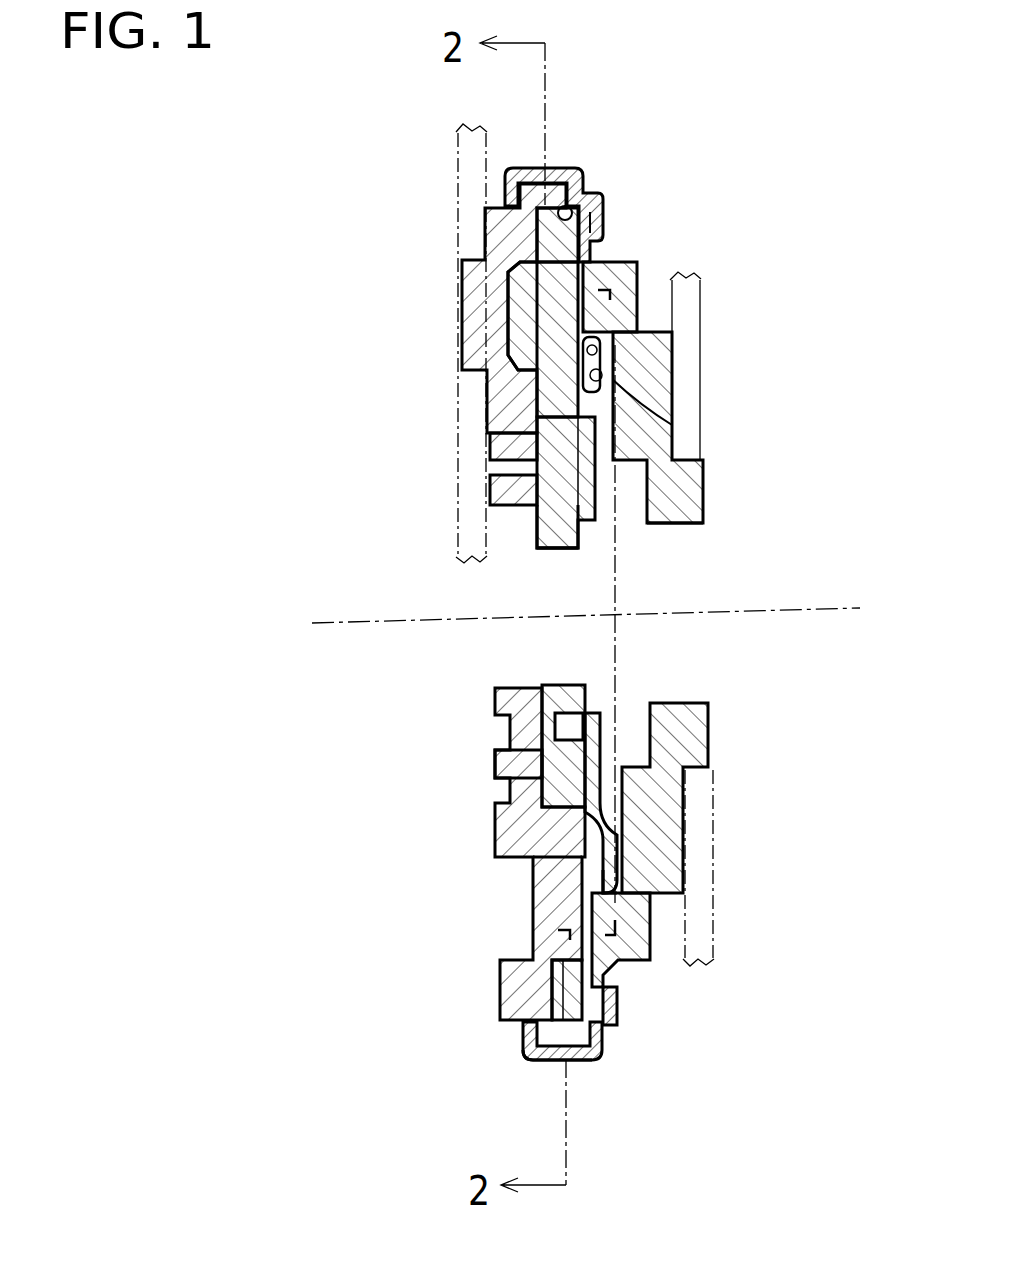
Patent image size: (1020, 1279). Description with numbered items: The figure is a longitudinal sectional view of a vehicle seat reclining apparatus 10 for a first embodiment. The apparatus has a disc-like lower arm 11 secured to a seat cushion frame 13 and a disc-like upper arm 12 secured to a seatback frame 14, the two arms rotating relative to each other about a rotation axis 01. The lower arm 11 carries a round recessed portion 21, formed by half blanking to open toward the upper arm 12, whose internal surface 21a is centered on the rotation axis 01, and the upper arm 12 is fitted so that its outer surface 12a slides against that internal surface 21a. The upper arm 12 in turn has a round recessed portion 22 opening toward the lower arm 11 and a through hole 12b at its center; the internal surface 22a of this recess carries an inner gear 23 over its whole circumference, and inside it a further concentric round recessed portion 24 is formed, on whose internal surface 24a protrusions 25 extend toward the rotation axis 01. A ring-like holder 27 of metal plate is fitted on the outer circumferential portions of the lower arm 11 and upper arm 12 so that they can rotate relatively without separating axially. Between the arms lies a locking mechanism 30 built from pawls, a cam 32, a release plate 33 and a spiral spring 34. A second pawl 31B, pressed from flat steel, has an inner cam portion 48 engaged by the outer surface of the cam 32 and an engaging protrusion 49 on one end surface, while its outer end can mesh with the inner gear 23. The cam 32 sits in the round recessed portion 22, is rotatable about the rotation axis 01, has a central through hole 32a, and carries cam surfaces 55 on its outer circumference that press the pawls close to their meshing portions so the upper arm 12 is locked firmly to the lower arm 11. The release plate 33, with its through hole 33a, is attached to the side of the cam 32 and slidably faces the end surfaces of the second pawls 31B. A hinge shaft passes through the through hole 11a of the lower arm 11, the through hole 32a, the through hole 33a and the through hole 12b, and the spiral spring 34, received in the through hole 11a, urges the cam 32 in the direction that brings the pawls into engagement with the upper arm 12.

The vehicle seat reclining apparatus 10 is at (392, 194).
The seat cushion frame 13 is at (455, 168).
The seatback frame 14 is at (700, 908).
The lower arm 11 is at (478, 307).
The through hole 11a is at (518, 803).
The upper arm 12 is at (657, 385).
The outer surface 12a is at (587, 1062).
The through hole 12b is at (672, 527).
The round recessed portion 21 is at (596, 220).
The internal surface 21a is at (586, 195).
The round recessed portion 22 is at (617, 1000).
The internal surface 22a is at (553, 935).
The inner gear 23 is at (620, 270).
The round recessed portion 24 is at (617, 362).
The internal surface 24a is at (620, 870).
The protrusions 25 is at (540, 873).
The ring-like holder 27 is at (540, 1062).
The locking mechanism 30 is at (525, 326).
The second pawl 31B is at (540, 298).
The cam 32 is at (555, 522).
The through hole 32a is at (543, 557).
The release plate 33 is at (640, 747).
The through hole 33a is at (585, 705).
The spiral spring 34 is at (497, 762).
The inner cam portion 48 is at (560, 450).
The engaging protrusion 49 is at (620, 388).
The cam surfaces 55 is at (552, 400).
The rotation axis 01 is at (611, 614).